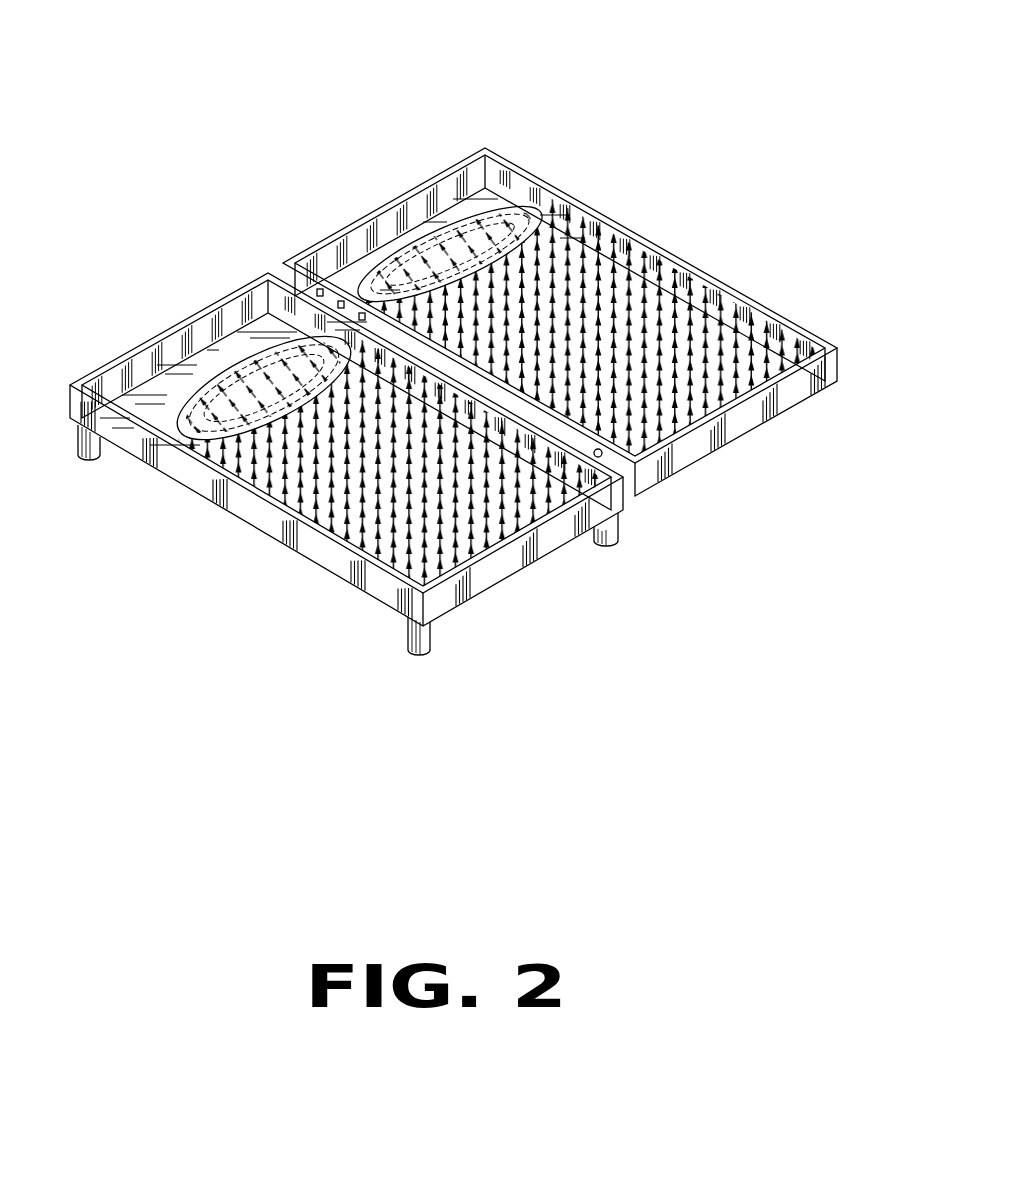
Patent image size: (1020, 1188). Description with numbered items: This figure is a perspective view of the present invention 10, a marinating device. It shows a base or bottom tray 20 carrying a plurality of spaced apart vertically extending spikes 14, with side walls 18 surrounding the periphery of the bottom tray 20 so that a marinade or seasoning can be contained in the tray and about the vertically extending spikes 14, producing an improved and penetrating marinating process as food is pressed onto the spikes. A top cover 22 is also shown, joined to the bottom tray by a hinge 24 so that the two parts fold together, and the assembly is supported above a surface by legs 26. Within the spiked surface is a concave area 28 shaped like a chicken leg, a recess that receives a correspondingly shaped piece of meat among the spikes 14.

The present invention 10 is at (453, 362).
The vertically extending spikes 14 is at (240, 447).
The side walls 18 is at (398, 202).
The bottom tray 20 is at (323, 548).
The top cover 22 is at (685, 273).
The hinge 24 is at (598, 456).
The legs 26 is at (606, 528).
The concave area 28 is at (515, 240).